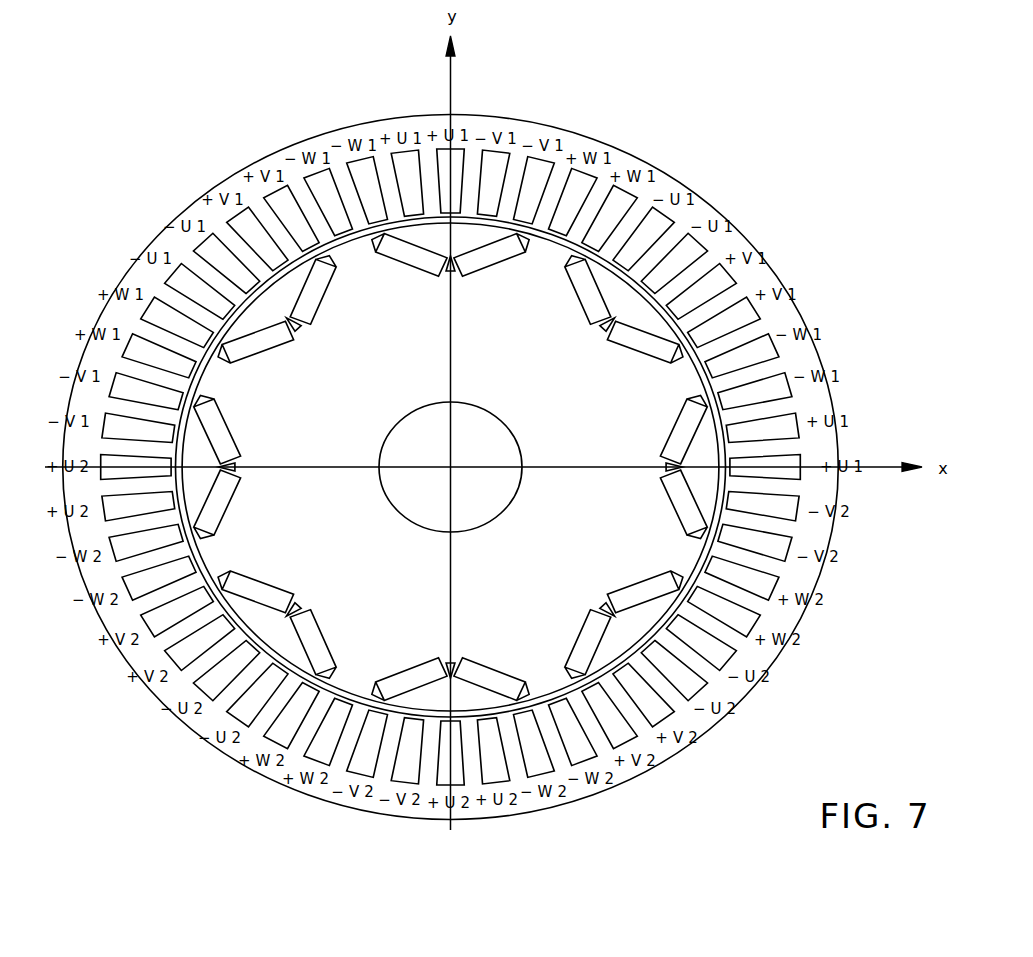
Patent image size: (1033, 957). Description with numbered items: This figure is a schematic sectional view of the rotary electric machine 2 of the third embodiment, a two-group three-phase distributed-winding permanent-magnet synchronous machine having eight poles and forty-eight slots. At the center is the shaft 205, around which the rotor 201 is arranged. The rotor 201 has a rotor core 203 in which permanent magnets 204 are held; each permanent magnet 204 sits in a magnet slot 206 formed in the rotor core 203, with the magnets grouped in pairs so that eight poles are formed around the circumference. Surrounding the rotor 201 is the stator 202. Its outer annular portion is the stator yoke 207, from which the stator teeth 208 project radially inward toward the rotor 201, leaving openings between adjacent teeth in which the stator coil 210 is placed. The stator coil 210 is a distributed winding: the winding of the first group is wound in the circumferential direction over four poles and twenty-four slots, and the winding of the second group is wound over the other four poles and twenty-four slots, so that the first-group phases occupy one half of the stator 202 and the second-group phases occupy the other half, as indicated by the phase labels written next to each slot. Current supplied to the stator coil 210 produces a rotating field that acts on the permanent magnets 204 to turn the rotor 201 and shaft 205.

The rotary electric machine 2 is at (160, 103).
The rotor 201 is at (228, 316).
The stator 202 is at (190, 207).
The rotor core 203 is at (355, 233).
The permanent magnets 204 is at (683, 437).
The shaft 205 is at (493, 498).
The magnet slot 206 is at (780, 570).
The stator yoke 207 is at (573, 142).
The stator teeth 208 is at (605, 245).
The stator coil 210 is at (707, 285).